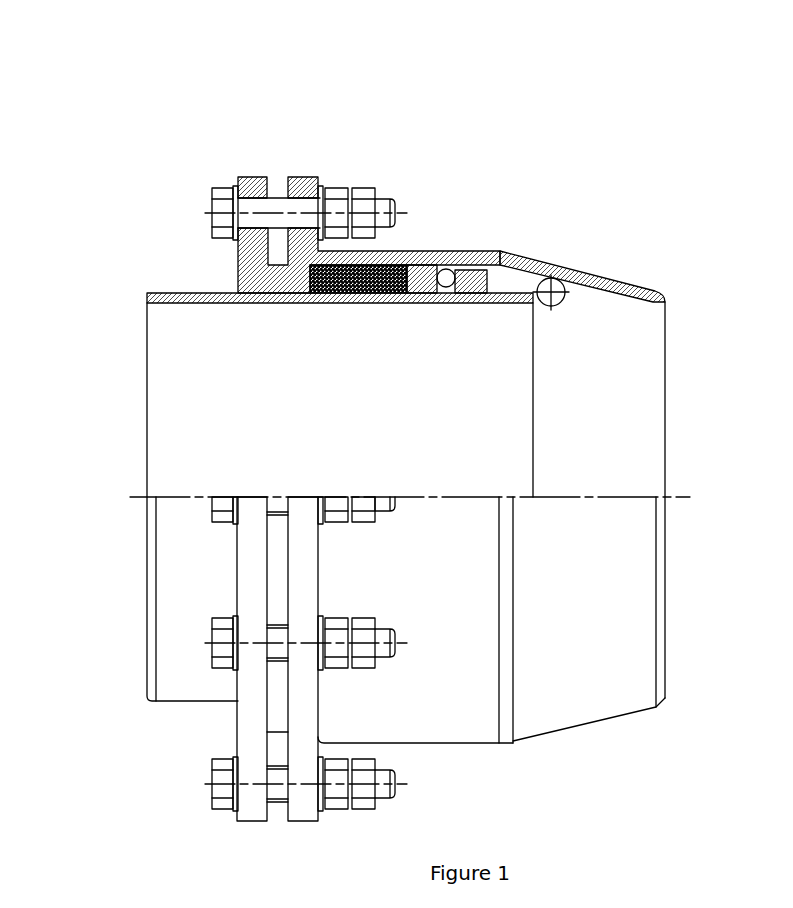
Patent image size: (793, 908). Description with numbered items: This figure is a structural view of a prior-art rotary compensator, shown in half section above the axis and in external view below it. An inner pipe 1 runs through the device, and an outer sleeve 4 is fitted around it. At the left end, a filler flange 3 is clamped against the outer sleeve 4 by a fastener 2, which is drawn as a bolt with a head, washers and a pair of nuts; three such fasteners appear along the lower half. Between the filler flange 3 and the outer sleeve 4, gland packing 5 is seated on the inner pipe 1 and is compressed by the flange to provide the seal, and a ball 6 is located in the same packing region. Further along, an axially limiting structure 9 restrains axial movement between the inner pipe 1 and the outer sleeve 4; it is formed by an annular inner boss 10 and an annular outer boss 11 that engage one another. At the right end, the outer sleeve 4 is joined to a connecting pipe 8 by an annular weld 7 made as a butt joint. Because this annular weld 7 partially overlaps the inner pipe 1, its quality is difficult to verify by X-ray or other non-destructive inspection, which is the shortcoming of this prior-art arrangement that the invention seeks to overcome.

The inner pipe 1 is at (182, 293).
The fastener 2 is at (212, 210).
The filler flange 3 is at (258, 184).
The outer sleeve 4 is at (303, 184).
The gland packing 5 is at (363, 268).
The ball 6 is at (447, 278).
The annular weld for connecting the outer sleeve and a connecting pipe 7 is at (502, 257).
The connecting pipe 8 is at (526, 265).
The axially limiting structure 9 is at (557, 292).
The annular inner boss 10 is at (421, 291).
The annular outer boss 11 is at (473, 280).